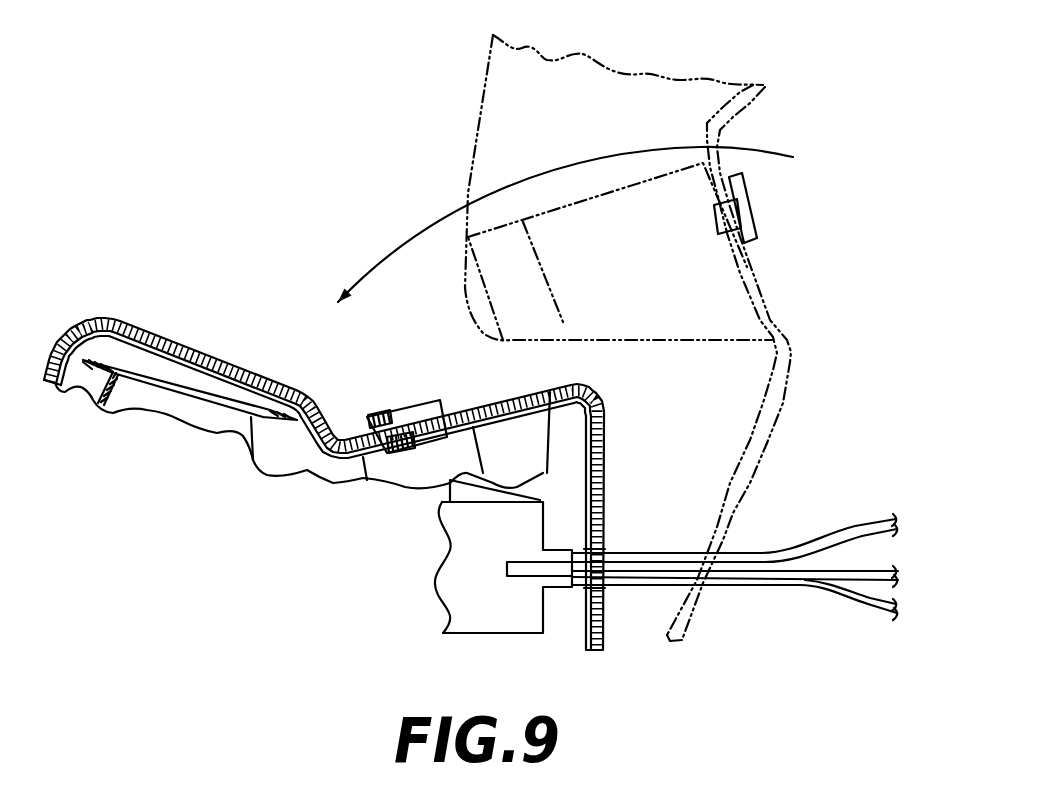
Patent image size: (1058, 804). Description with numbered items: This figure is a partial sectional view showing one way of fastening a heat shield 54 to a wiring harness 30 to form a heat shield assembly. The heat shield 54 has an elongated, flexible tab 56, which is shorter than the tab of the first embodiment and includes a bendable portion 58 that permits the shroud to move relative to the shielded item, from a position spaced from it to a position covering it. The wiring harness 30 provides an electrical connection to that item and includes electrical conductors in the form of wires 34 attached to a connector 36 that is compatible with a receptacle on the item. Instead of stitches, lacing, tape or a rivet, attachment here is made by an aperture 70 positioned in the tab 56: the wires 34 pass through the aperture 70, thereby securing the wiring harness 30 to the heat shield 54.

The wiring harness 30 is at (740, 603).
The wires 34 is at (808, 587).
The connector 36 is at (470, 587).
The heat shield 54 is at (176, 300).
The tab 56 is at (606, 474).
The bendable portion 58 is at (608, 385).
The aperture 70 is at (608, 547).